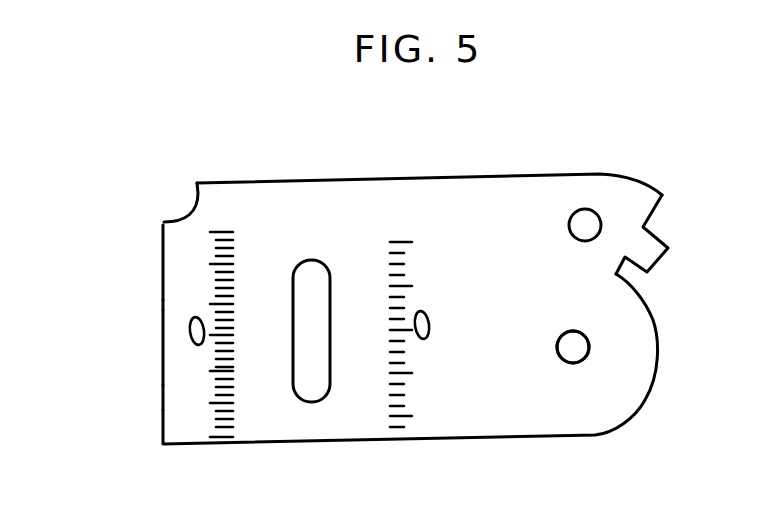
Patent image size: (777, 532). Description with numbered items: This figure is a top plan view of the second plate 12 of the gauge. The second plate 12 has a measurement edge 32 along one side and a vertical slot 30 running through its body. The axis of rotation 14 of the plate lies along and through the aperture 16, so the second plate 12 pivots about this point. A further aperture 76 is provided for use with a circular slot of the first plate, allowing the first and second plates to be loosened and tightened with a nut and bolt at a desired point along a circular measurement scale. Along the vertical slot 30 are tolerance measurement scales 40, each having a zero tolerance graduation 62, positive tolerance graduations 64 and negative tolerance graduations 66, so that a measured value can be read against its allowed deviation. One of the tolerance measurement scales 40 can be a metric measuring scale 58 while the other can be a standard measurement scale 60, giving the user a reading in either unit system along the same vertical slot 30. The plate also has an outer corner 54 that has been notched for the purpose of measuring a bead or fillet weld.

The second plate 12 is at (520, 396).
The axis of rotation 14 is at (580, 350).
The aperture 16 is at (590, 350).
The vertical slot 30 is at (313, 357).
The measurement edge 32 is at (664, 258).
The tolerance measurement scales 40 is at (430, 262).
The outer corner 54 is at (178, 198).
The metric measuring scale 58 is at (185, 250).
The standard measurement scale 60 is at (438, 350).
The zero tolerance graduation 62 is at (188, 332).
The positive tolerance graduations 64 is at (177, 298).
The negative tolerance graduations 66 is at (187, 395).
The aperture 76 is at (585, 222).